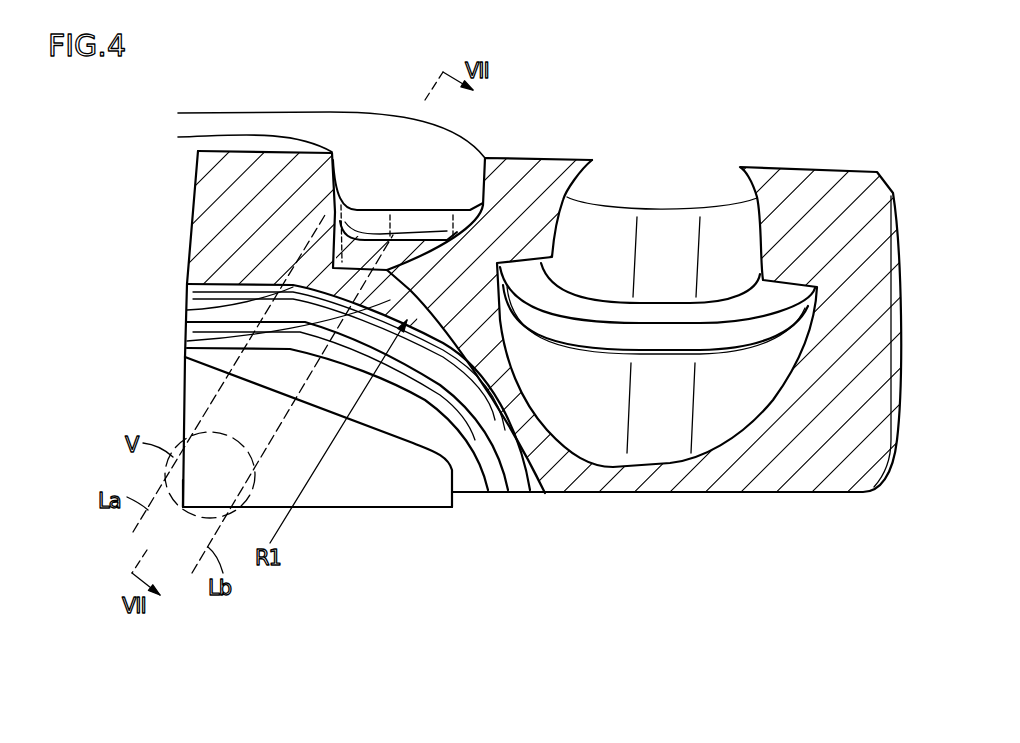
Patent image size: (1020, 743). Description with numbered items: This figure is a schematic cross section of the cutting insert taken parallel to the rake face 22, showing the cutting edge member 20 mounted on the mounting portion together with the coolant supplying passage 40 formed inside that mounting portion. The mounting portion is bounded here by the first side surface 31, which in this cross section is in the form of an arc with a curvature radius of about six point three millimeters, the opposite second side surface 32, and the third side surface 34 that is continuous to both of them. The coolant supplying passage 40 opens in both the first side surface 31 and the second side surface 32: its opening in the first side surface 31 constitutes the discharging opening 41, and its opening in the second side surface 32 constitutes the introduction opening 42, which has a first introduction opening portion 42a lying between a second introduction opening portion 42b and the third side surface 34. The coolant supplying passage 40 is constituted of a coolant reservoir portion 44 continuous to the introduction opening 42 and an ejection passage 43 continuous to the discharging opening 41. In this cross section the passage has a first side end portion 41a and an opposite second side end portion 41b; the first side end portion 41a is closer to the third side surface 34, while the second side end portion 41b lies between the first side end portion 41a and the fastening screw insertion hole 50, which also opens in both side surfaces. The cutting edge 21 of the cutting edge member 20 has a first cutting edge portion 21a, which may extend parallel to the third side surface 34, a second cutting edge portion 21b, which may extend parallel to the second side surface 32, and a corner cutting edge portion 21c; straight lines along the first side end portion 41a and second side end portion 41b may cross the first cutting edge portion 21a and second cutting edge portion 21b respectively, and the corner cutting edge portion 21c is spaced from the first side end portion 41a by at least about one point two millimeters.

The cutting edge member 20 is at (262, 536).
The cutting edge 21 is at (262, 519).
The first cutting edge portion 21a is at (183, 398).
The second cutting edge portion 21b is at (307, 507).
The corner cutting edge portion 21c is at (183, 507).
The rake face 22 is at (360, 480).
The first side surface 31 is at (414, 332).
The second side surface 32 is at (532, 158).
The third side surface 34 is at (197, 182).
The coolant supplying passage 40 is at (95, 113).
The discharging opening 41 is at (301, 388).
The first side end portion 41a is at (211, 305).
The second side end portion 41b is at (128, 300).
The introduction opening 42 is at (290, 156).
The first introduction opening portion 42a is at (231, 139).
The second introduction opening portion 42b is at (307, 130).
The ejection passage 43 is at (385, 270).
The coolant reservoir portion 44 is at (463, 218).
The fastening screw insertion hole 50 is at (657, 240).